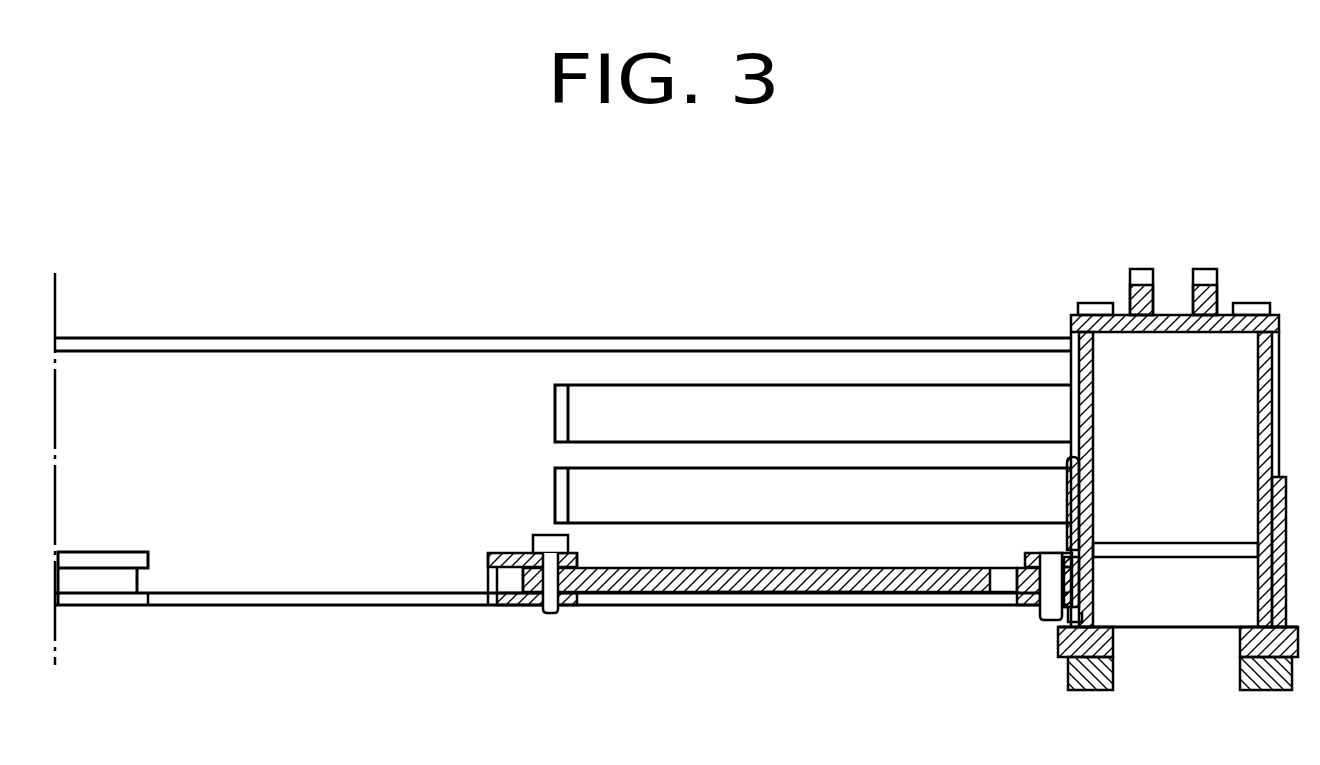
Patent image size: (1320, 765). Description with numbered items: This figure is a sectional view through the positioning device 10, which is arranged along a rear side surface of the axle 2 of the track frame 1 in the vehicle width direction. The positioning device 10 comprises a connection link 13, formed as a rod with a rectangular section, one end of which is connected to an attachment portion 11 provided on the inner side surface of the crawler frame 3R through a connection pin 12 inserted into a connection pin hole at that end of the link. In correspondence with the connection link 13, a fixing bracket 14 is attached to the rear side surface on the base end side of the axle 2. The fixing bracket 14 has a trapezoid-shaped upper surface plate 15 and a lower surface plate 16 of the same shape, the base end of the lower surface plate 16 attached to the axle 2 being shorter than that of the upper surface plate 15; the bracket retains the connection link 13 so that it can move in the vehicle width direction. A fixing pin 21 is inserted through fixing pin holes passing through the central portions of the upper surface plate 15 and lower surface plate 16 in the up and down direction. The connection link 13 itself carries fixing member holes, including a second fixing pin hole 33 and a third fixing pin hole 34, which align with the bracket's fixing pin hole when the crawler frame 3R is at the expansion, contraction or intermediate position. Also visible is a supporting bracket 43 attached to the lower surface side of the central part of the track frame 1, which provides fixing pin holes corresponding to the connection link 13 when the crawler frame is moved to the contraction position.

The track frame 1 is at (276, 337).
The axle 2 is at (825, 337).
The crawler frame 3R is at (1173, 315).
The positioning device 10 is at (843, 619).
The attachment portion 11 is at (1028, 602).
The connection pin 12 is at (1052, 612).
The connection link 13 is at (676, 590).
The fixing bracket 14 is at (486, 551).
The upper surface plate 15 is at (518, 552).
The lower surface plate 16 is at (503, 607).
The fixing pin 21 is at (550, 614).
The second fixing pin hole 33 is at (1010, 582).
The third fixing pin hole 34 is at (777, 592).
The supporting bracket 43 is at (94, 600).